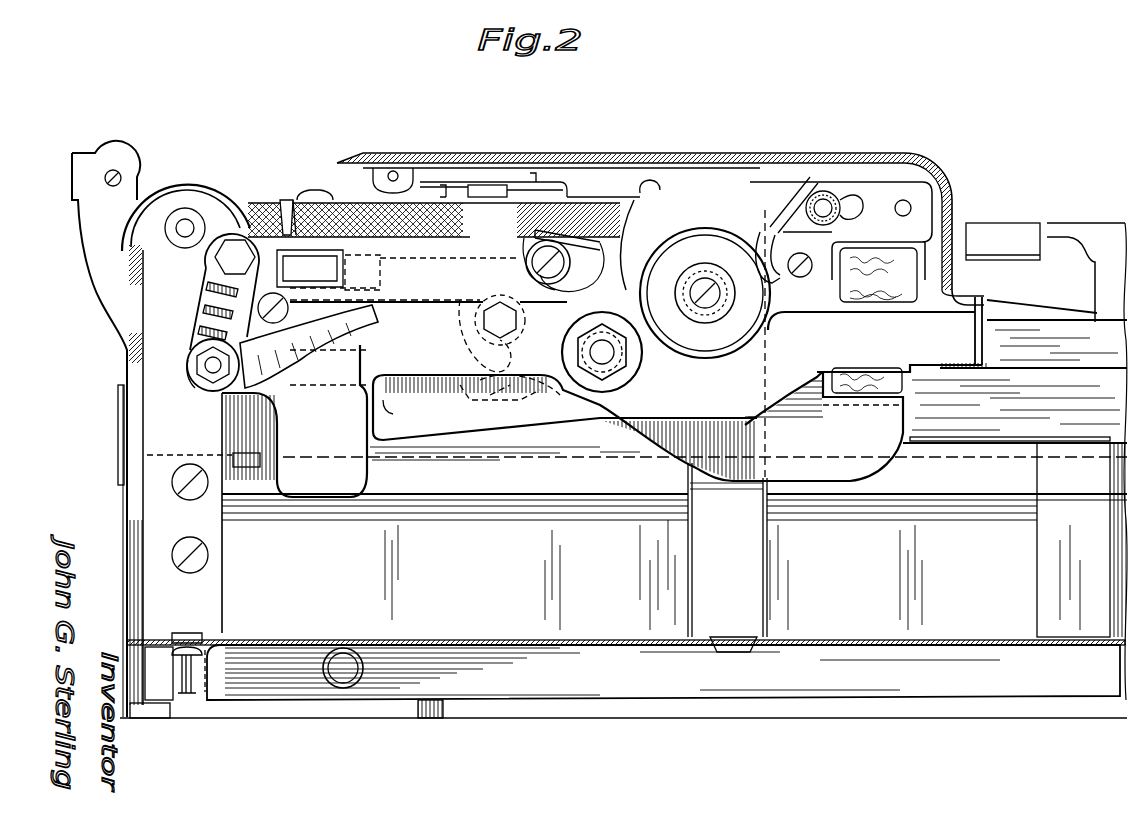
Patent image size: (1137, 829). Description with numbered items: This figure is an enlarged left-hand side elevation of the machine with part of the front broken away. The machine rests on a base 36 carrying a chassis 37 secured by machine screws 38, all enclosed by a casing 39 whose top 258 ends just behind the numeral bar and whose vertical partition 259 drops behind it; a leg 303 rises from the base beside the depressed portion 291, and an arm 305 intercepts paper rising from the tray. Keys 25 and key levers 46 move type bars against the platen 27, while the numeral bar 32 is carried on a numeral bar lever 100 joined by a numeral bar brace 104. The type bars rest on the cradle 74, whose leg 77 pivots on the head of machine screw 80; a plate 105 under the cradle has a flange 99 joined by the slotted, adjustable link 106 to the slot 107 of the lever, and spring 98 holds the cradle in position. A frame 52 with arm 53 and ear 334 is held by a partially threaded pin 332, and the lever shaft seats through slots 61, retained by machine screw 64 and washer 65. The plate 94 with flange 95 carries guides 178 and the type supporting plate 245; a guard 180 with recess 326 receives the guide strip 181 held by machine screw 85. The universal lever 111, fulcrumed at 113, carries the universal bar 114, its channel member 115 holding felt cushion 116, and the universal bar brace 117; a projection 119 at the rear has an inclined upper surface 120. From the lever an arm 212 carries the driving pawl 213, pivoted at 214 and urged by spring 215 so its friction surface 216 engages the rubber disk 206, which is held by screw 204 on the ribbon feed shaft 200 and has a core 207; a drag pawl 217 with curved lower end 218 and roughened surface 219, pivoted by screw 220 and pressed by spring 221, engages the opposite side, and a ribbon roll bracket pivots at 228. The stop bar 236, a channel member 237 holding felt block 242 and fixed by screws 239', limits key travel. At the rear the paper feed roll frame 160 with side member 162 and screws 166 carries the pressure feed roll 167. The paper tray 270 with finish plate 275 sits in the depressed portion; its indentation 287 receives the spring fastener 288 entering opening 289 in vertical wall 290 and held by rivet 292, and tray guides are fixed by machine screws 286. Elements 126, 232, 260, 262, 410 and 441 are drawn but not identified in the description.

The keys 25 is at (1095, 219).
The platen 27 is at (183, 165).
The numeral bar 32 is at (1030, 223).
The base 36 is at (867, 639).
The machine frame or chassis 37 is at (125, 372).
The machine screws 38 is at (200, 634).
The casing 39 is at (952, 160).
The key levers 46 is at (1088, 360).
The frame 52 is at (471, 436).
The arm 53 is at (579, 419).
The slots 61 is at (600, 420).
The machine screw 64 is at (508, 325).
The washer 65 is at (565, 347).
The cradle 74 is at (338, 291).
The leg 77 is at (450, 269).
The machine screw 80 is at (381, 272).
The machine screw 85 is at (313, 208).
The plate 94 is at (540, 180).
The flange 95 is at (573, 185).
The spring 98 is at (270, 298).
The flange 99 is at (330, 200).
The numeral bar lever 100 is at (250, 398).
The numeral bar brace 104 is at (278, 437).
The plate 105 is at (318, 313).
The link 106 is at (203, 300).
The slot 107 is at (283, 367).
The universal lever 111 is at (791, 454).
The fulcrum 113 is at (638, 380).
The universal bar 114 is at (925, 413).
The channel member 115 is at (868, 398).
The felt cushion 116 is at (845, 367).
The universal bar brace 117 is at (390, 418).
The projection 119 is at (380, 364).
The inclined upper surface 120 is at (461, 336).
The hub 126 is at (187, 228).
The paper feed roll frame 160 is at (64, 222).
The side member 162 is at (93, 262).
The screws 166 is at (100, 168).
The pressure feed roll 167 is at (116, 152).
The guide 178 is at (492, 185).
The guard 180 is at (283, 210).
The guide strip 181 is at (292, 205).
The ribbon feed shaft 200 is at (703, 285).
The screw 204 is at (716, 313).
The rubber disk 206 is at (712, 355).
The core 207 is at (704, 306).
The arm 212 is at (735, 205).
The driving pawl 213 is at (796, 256).
The pivot 214 is at (838, 218).
The spring 215 is at (766, 228).
The friction surface 216 is at (787, 264).
The drag pawl 217 is at (565, 258).
The curved lower end 218 is at (620, 268).
The roughened surface 219 is at (696, 284).
The screw 220 is at (540, 278).
The spring 221 is at (525, 236).
The pivot 228 is at (648, 183).
The screw 232 is at (240, 460).
The stop bar 236 is at (932, 250).
The channel member 237 is at (878, 275).
The machine screws 239' is at (954, 184).
The felt block 242 is at (876, 292).
The type supporting plate 245 is at (455, 183).
The top 258 is at (915, 153).
The vertical partition 259 is at (955, 220).
The cover top 260 is at (724, 157).
The cover top 262 is at (855, 153).
The paper tray 270 is at (477, 581).
The finish plate 275 is at (121, 415).
The machine screws 286 is at (205, 505).
The indentation 287 is at (190, 698).
The spring fastener 288 is at (308, 690).
The opening 289 is at (207, 697).
The vertical wall 290 is at (153, 700).
The depressed portion 291 is at (527, 702).
The rivet 292 is at (345, 648).
The leg 303 is at (1070, 453).
The arm 305 is at (987, 436).
The recess 326 is at (306, 259).
The partially threaded pin 332 is at (485, 300).
The ear 334 is at (462, 382).
The clamp 410 is at (412, 718).
The plate 441 is at (478, 266).